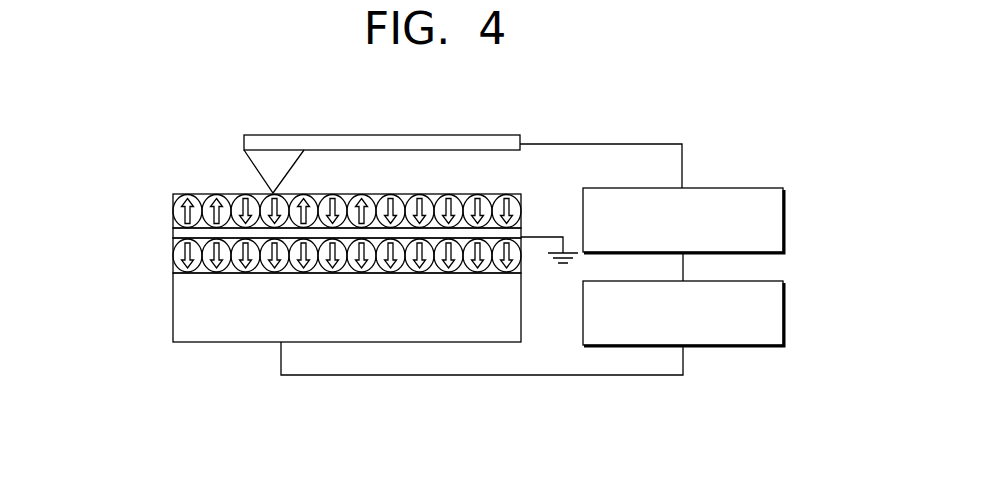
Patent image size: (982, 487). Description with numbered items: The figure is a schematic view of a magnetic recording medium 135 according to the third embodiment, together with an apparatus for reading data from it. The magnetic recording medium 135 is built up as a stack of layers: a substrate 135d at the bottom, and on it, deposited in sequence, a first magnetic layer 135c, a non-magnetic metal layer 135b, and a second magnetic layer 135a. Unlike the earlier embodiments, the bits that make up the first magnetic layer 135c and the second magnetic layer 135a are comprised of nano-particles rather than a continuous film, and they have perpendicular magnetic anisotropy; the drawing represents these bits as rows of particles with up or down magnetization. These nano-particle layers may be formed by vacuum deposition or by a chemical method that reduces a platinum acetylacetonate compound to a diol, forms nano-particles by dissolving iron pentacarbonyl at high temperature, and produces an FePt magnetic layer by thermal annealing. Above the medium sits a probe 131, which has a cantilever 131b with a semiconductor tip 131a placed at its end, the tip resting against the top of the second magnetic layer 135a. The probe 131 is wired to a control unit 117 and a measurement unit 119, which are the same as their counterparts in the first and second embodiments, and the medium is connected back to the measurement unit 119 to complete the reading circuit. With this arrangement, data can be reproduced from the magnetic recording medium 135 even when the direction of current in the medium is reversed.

The probe 131 is at (330, 135).
The semiconductor tip 131a is at (280, 172).
The cantilever 131b is at (327, 143).
The magnetic recording medium 135 is at (270, 262).
The second magnetic layer 135a is at (172, 208).
The non-magnetic metal layer 135b is at (172, 233).
The first magnetic layer 135c is at (172, 257).
The substrate 135d is at (299, 303).
The control unit 117 is at (784, 219).
The measurement unit 119 is at (784, 312).